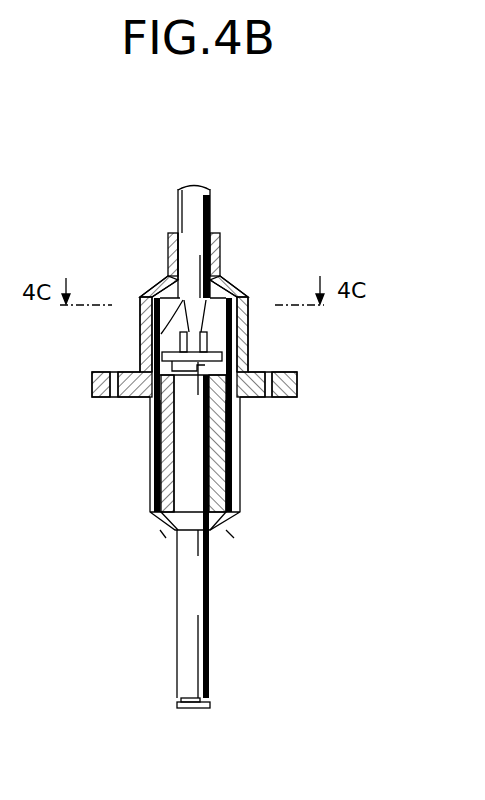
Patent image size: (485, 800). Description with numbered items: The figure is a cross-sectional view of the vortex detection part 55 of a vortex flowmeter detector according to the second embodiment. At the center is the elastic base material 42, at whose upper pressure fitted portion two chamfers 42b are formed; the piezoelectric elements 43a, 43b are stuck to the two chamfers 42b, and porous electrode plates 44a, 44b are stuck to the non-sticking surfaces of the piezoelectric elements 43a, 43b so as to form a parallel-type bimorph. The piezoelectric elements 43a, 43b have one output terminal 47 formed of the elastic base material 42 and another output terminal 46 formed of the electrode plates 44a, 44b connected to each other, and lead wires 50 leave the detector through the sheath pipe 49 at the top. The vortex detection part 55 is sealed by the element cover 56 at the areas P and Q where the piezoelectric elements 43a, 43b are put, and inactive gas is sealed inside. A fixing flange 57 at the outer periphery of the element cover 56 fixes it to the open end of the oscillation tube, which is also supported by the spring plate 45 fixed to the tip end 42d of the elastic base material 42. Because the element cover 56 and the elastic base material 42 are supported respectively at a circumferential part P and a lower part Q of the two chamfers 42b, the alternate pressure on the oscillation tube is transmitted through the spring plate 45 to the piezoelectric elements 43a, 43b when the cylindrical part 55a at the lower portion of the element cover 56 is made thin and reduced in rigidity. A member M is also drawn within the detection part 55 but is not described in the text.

The sheath pipe 49 is at (210, 202).
The lead wires 50 is at (163, 286).
The element cover 56 is at (228, 284).
The vortex detection part 55 is at (258, 286).
The fixing flange 57 is at (298, 373).
The cylindrical part 55a is at (152, 494).
The output terminal 47 is at (154, 327).
The member M is at (154, 351).
The output terminal 46 is at (207, 338).
The electrode plate 44b is at (190, 419).
The piezoelectric element 43b is at (156, 445).
The piezoelectric element 43a is at (232, 445).
The electrode plate 44a is at (224, 471).
The elastic base material 42 is at (238, 530).
The chamfers 42b is at (200, 418).
The tip end 42d is at (183, 700).
The spring plate 45 is at (208, 706).
The circumferential part P is at (234, 538).
The lower part Q is at (166, 538).